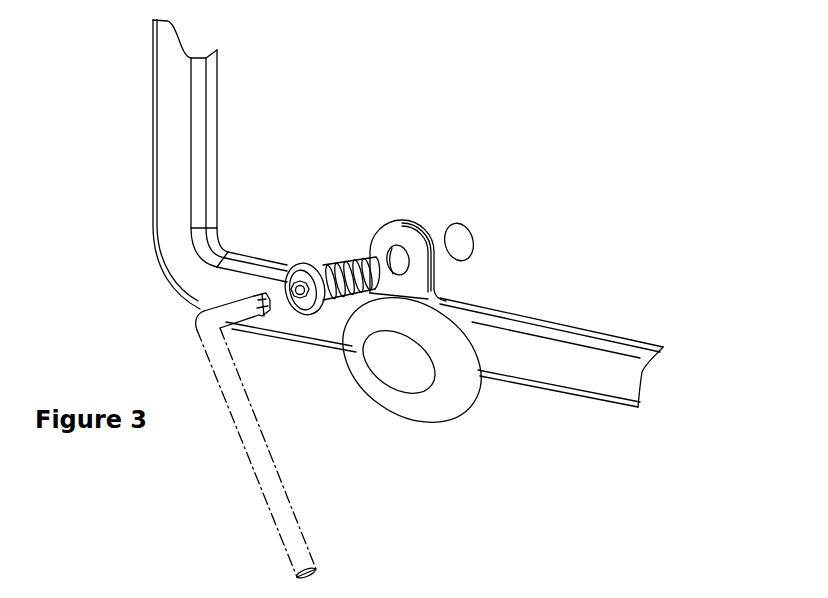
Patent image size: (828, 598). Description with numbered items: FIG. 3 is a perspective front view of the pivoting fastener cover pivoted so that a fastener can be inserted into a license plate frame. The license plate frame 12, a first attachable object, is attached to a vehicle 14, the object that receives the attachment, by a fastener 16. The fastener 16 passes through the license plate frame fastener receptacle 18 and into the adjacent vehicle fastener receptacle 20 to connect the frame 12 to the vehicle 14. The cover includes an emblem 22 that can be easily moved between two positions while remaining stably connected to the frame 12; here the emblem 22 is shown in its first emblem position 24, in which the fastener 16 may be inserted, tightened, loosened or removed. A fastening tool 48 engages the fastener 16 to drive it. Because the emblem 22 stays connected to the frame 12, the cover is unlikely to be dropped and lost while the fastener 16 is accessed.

The license plate frame 12 is at (153, 115).
The vehicle 14 is at (440, 256).
The fastener 16 is at (340, 262).
The license plate frame fastener receptacle 18 is at (393, 240).
The vehicle fastener receptacle 20 is at (472, 230).
The emblem 22 is at (412, 360).
The first emblem position 24 is at (472, 413).
The fastening tool 48 is at (250, 463).